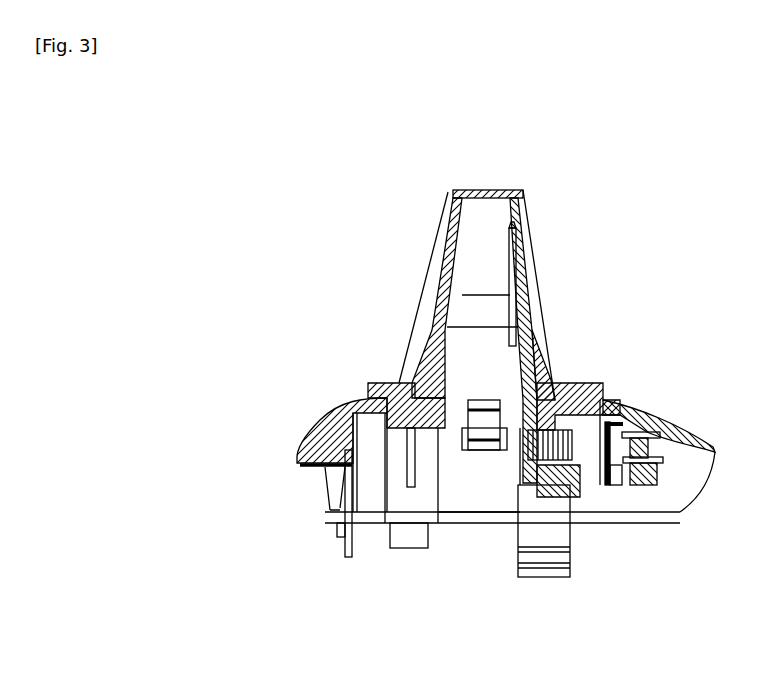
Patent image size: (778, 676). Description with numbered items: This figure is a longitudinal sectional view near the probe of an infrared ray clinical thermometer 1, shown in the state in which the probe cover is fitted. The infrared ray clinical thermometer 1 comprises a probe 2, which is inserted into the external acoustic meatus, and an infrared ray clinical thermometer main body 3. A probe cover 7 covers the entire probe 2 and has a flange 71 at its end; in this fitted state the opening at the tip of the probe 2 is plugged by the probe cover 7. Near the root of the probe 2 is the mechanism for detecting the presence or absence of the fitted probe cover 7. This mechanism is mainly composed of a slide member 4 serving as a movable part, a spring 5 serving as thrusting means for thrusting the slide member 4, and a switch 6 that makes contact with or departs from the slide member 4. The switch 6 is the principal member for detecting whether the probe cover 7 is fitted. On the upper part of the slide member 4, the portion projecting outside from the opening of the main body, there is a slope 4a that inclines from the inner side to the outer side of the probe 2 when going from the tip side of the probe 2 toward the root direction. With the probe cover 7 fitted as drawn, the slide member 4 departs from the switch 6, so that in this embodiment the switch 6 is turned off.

The infrared ray clinical thermometer 1 is at (288, 198).
The probe 2 is at (450, 252).
The infrared ray clinical thermometer main body 3 is at (323, 420).
The slide member 4 is at (575, 383).
The slope 4a is at (554, 372).
The spring 5 is at (575, 493).
The switch 6 is at (613, 457).
The probe cover 7 is at (541, 272).
The flange 71 is at (603, 393).